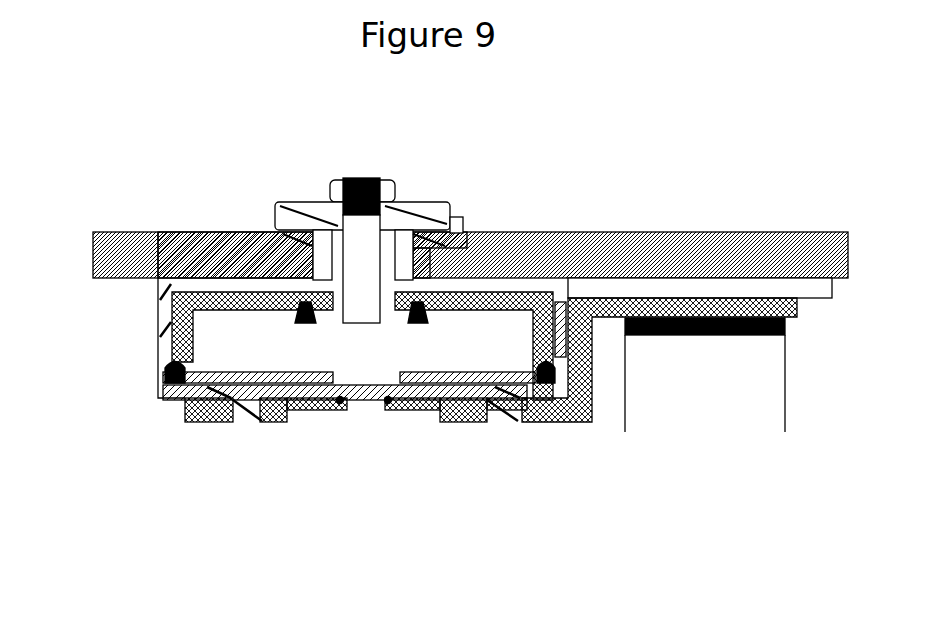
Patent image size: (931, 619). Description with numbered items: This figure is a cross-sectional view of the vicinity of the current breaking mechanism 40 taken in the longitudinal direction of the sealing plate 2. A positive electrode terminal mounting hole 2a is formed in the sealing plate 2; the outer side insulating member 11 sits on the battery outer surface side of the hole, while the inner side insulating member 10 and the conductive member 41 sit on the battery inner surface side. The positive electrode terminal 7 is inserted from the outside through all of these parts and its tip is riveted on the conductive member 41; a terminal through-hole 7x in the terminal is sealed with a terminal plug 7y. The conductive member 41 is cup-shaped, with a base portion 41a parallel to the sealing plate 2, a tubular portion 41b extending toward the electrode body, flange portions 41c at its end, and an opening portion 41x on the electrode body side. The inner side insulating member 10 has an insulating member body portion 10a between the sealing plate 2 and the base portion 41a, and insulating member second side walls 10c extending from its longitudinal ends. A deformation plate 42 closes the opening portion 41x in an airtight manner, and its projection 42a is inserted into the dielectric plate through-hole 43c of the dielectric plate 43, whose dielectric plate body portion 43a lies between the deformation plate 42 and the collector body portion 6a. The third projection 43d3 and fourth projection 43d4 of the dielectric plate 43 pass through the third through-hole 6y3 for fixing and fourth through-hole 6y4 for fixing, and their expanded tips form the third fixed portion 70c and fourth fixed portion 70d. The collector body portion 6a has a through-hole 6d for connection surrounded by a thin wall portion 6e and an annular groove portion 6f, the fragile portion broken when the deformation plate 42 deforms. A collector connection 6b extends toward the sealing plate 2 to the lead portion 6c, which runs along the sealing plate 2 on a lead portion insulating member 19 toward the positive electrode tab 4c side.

The sealing plate 2 is at (815, 245).
The positive electrode terminal mounting hole 2a is at (262, 233).
The positive electrode tab 4c is at (747, 405).
The collector body portion 6a is at (460, 420).
The collector connection 6b is at (590, 395).
The lead portion 6c is at (700, 307).
The through-hole for connection 6d is at (387, 417).
The thin wall portion 6e is at (423, 417).
The annular groove portion 6f is at (343, 406).
The third through-hole for fixing 6y3 is at (262, 420).
The fourth through-hole for fixing 6y4 is at (467, 423).
The positive electrode terminal 7 is at (390, 223).
The terminal through-hole 7x is at (307, 215).
The terminal plug 7y is at (362, 258).
The inner side insulating member 10 is at (253, 233).
The insulating member body portion 10a is at (143, 232).
The insulating member second side wall 10c is at (172, 300).
The outer side insulating member 11 is at (468, 230).
The lead portion insulating member 19 is at (757, 290).
The current breaking mechanism 40 is at (470, 350).
The conductive member 41 is at (540, 300).
The base portion 41a is at (183, 233).
The tubular portion 41b is at (173, 323).
The flange portion 41c is at (160, 372).
The opening portion 41x is at (170, 352).
The deformation plate 42 is at (200, 400).
The projection 42a is at (353, 407).
The dielectric plate 43 is at (510, 423).
The dielectric plate body portion 43a is at (160, 395).
The dielectric plate through-hole 43c is at (290, 423).
The third projection 43d3 is at (253, 427).
The fourth projection 43d4 is at (500, 420).
The third fixed portion 70c is at (240, 420).
The fourth fixed portion 70d is at (495, 423).